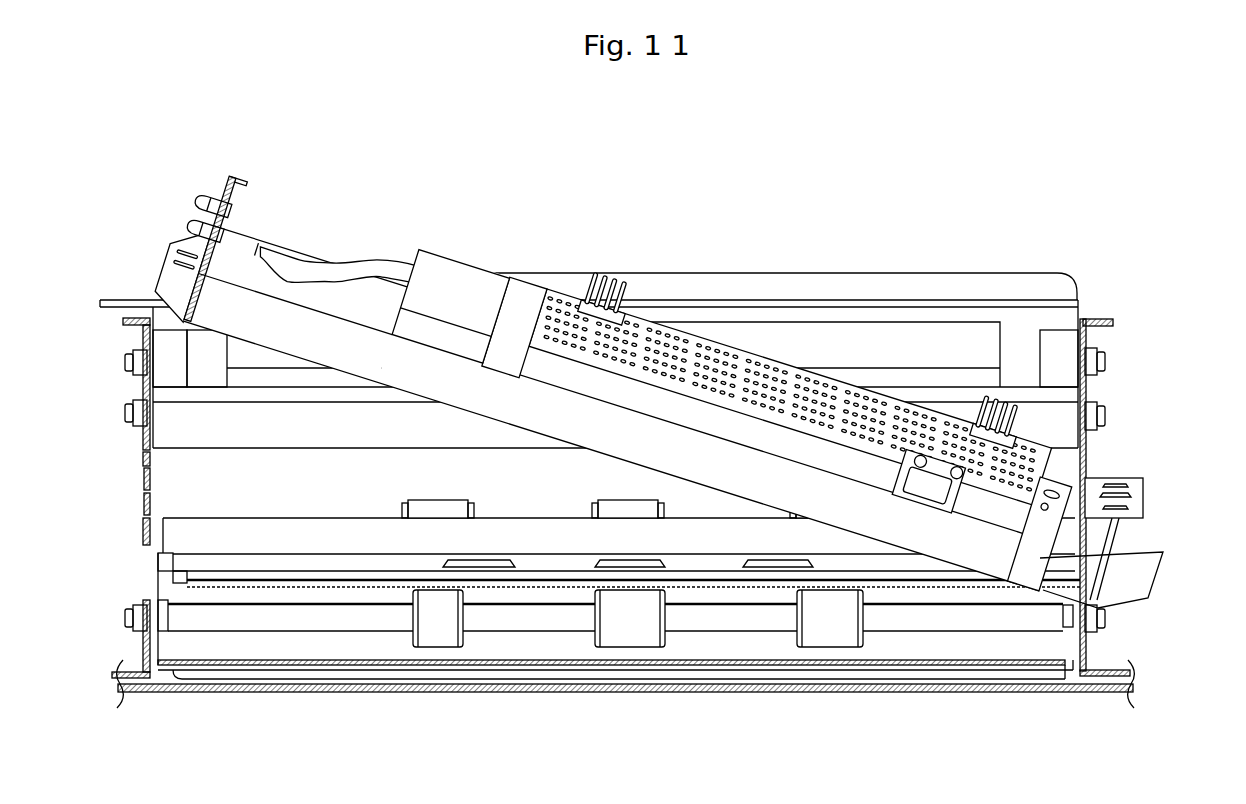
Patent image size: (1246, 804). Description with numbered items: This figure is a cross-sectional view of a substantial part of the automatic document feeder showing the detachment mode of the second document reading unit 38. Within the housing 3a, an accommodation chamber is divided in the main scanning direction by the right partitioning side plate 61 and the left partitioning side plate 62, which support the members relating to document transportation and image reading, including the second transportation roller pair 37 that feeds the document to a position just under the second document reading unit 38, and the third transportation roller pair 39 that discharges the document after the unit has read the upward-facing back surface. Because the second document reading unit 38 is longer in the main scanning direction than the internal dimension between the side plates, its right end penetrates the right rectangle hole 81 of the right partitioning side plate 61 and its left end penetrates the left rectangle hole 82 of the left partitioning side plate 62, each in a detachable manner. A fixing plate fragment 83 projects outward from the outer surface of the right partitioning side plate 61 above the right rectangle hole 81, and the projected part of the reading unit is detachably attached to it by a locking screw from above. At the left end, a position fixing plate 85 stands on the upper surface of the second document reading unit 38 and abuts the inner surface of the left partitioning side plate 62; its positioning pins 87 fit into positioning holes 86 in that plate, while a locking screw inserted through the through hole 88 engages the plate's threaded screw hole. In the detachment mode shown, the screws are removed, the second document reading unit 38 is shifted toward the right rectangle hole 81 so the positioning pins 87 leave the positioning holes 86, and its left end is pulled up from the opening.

The housing 3a is at (740, 693).
The second transportation roller pair 37 is at (438, 636).
The second document reading unit 38 is at (521, 292).
The third transportation roller pair 39 is at (420, 499).
The right partitioning side plate 61 is at (1103, 319).
The left partitioning side plate 62 is at (132, 318).
The right rectangle hole 81 is at (1097, 541).
The left rectangle hole 82 is at (145, 540).
The fixing plate fragment 83 is at (1143, 478).
The position fixing plate 85 is at (247, 178).
The positioning holes 86 is at (145, 505).
The positioning pins 87 is at (198, 228).
The through hole 88 is at (145, 459).